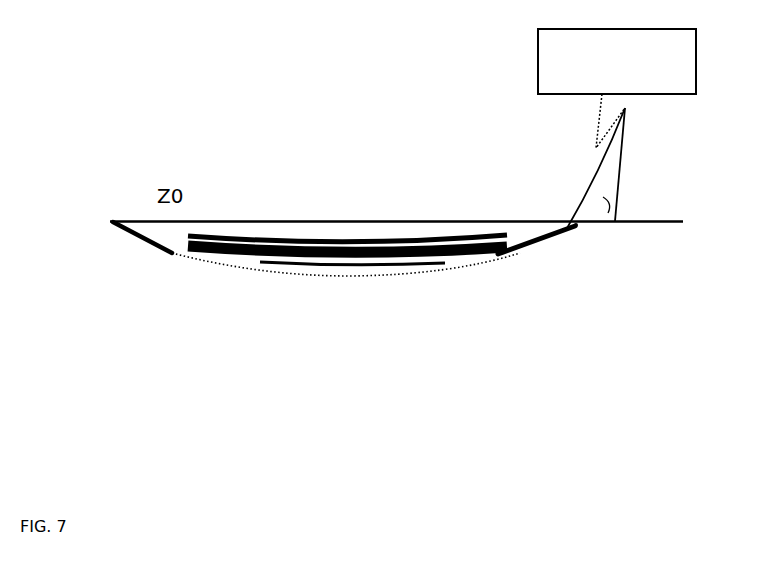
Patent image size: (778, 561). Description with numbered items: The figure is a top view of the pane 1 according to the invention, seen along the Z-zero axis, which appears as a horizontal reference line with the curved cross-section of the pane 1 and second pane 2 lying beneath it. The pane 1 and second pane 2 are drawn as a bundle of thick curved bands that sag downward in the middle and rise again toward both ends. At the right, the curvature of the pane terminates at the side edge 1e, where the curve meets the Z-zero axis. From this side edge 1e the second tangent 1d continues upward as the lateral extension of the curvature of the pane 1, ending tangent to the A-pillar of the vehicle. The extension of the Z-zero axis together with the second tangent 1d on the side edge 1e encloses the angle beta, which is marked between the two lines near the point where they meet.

The first pane 1 is at (321, 314).
The second pane 2 is at (347, 250).
The second tangent 1d is at (584, 177).
The side edge 1e is at (590, 236).